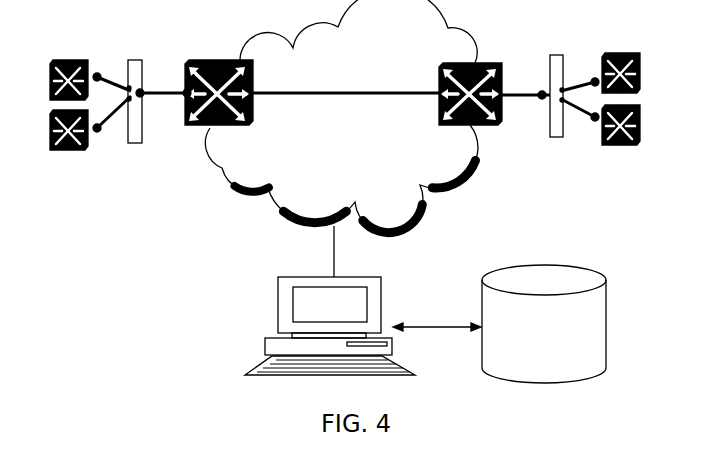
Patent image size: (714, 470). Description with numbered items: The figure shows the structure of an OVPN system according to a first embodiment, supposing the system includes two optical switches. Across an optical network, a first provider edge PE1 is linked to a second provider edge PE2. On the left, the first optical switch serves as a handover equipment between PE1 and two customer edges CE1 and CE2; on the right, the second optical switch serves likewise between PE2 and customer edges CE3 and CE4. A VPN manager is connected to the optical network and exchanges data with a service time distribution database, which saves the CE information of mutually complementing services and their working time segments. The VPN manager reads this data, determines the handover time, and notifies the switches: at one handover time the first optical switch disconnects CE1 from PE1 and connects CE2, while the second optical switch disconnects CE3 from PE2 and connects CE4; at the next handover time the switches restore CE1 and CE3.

The customer edge device CE1 is at (69, 63).
The customer edge device CE2 is at (69, 151).
The customer edge device CE3 is at (621, 59).
The customer edge device CE4 is at (621, 143).
The provider edge device PE1 is at (219, 76).
The provider edge device PE2 is at (470, 75).